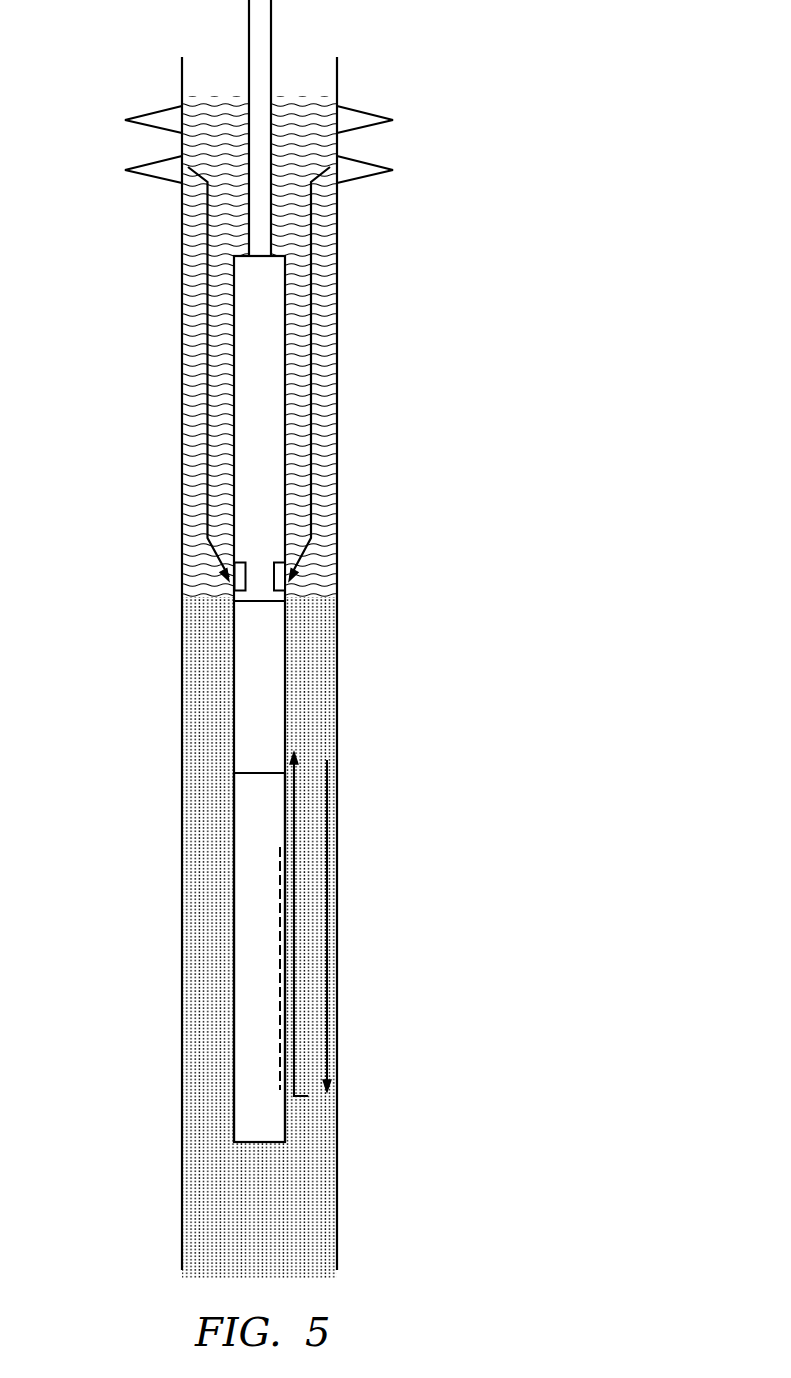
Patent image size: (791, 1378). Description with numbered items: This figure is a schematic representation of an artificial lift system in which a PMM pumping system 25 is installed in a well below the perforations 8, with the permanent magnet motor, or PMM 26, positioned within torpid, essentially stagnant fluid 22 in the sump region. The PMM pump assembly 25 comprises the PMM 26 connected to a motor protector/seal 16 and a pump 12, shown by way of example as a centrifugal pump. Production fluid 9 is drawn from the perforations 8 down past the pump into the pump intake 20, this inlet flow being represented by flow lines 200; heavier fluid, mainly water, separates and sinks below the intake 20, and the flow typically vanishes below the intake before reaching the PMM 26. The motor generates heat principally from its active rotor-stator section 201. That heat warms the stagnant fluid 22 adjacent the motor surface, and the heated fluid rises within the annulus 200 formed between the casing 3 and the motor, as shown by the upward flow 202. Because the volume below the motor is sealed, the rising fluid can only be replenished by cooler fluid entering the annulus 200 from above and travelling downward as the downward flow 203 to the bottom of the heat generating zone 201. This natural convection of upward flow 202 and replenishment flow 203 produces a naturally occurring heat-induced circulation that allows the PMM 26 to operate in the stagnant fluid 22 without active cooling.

The casing 3 is at (337, 737).
The perforations 8 is at (363, 164).
The production fluid 9 is at (310, 118).
The pump 12 is at (263, 327).
The motor protector/seal 16 is at (252, 714).
The pump intake 20 is at (280, 582).
The torpid fluid 22 is at (305, 1227).
The PMM pumping system 25 is at (148, 762).
The PMM 26 is at (253, 923).
The annulus 200 is at (313, 402).
The rotor-stator section 201 is at (280, 967).
The upward flow 202 is at (295, 900).
The downward flow 203 is at (327, 800).